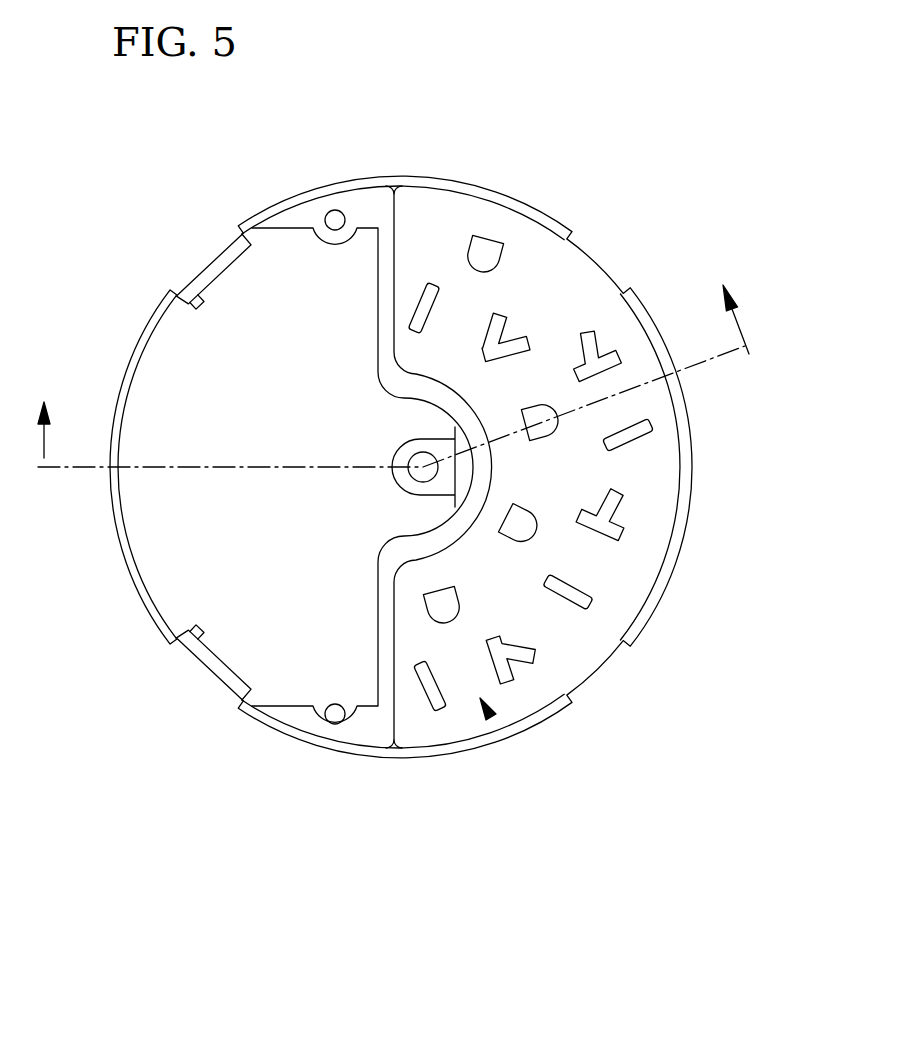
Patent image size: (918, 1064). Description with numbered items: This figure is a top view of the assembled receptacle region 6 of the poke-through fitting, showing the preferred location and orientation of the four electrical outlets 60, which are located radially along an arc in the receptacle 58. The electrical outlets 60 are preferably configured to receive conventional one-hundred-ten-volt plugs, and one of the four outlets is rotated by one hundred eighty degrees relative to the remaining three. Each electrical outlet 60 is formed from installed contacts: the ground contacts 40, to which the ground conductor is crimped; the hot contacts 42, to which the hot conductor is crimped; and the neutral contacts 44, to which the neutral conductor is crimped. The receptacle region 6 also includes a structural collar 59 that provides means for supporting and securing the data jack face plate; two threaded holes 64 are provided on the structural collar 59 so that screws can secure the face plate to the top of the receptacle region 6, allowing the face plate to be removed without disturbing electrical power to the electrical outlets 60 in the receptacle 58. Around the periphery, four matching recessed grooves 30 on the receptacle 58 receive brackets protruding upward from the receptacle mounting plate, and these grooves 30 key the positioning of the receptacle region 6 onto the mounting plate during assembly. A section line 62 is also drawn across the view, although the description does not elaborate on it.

The receptacle region 6 is at (394, 178).
The recessed grooves 30 is at (213, 266).
The ground contacts 40 is at (533, 408).
The hot contacts 42 is at (645, 435).
The neutral contacts 44 is at (594, 333).
The receptacle 58 is at (658, 510).
The structural collar 59 is at (265, 722).
The electrical outlets 60 is at (491, 717).
The section line 62 is at (399, 394).
The threaded holes 64 is at (335, 211).